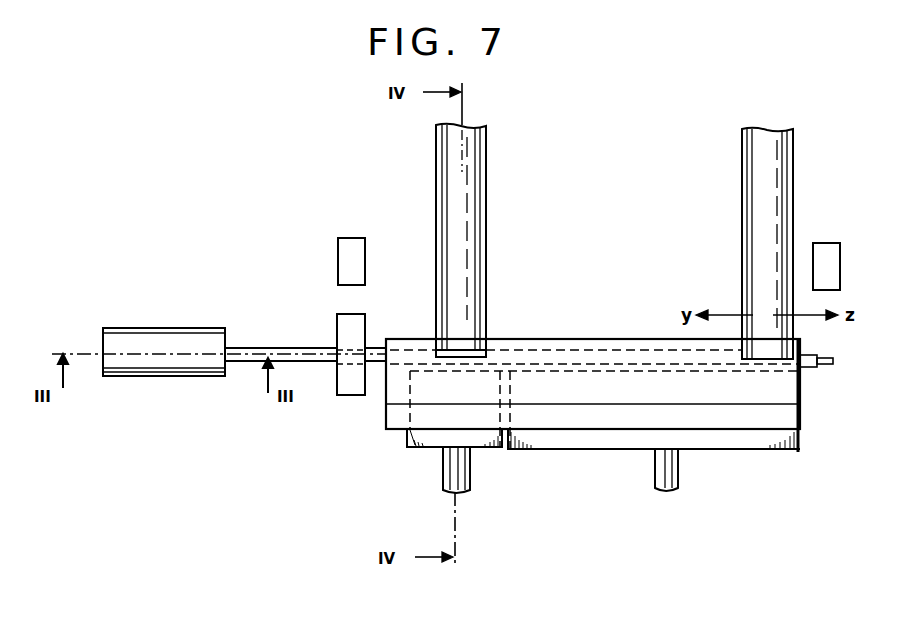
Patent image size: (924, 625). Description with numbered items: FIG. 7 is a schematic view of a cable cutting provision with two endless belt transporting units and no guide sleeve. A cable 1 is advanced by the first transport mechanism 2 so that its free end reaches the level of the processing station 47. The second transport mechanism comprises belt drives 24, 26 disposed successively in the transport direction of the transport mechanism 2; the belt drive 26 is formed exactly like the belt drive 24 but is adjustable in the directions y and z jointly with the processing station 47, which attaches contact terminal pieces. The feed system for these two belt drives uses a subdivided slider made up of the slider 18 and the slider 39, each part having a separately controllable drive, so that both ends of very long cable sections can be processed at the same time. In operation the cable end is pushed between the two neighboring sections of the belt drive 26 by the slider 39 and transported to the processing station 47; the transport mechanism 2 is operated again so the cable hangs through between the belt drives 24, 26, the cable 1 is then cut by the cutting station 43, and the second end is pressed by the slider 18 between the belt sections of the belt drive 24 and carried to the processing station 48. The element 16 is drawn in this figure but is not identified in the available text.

The cable 1 is at (257, 359).
The transport mechanism 2 is at (170, 356).
The base housing 16 is at (575, 396).
The slider 18 is at (407, 432).
The belt drive 24 is at (465, 268).
The belt drive 26 is at (765, 245).
The slider 39 is at (713, 440).
The cutting station 43 is at (352, 388).
The processing station 47 is at (830, 268).
The processing station 48 is at (358, 246).